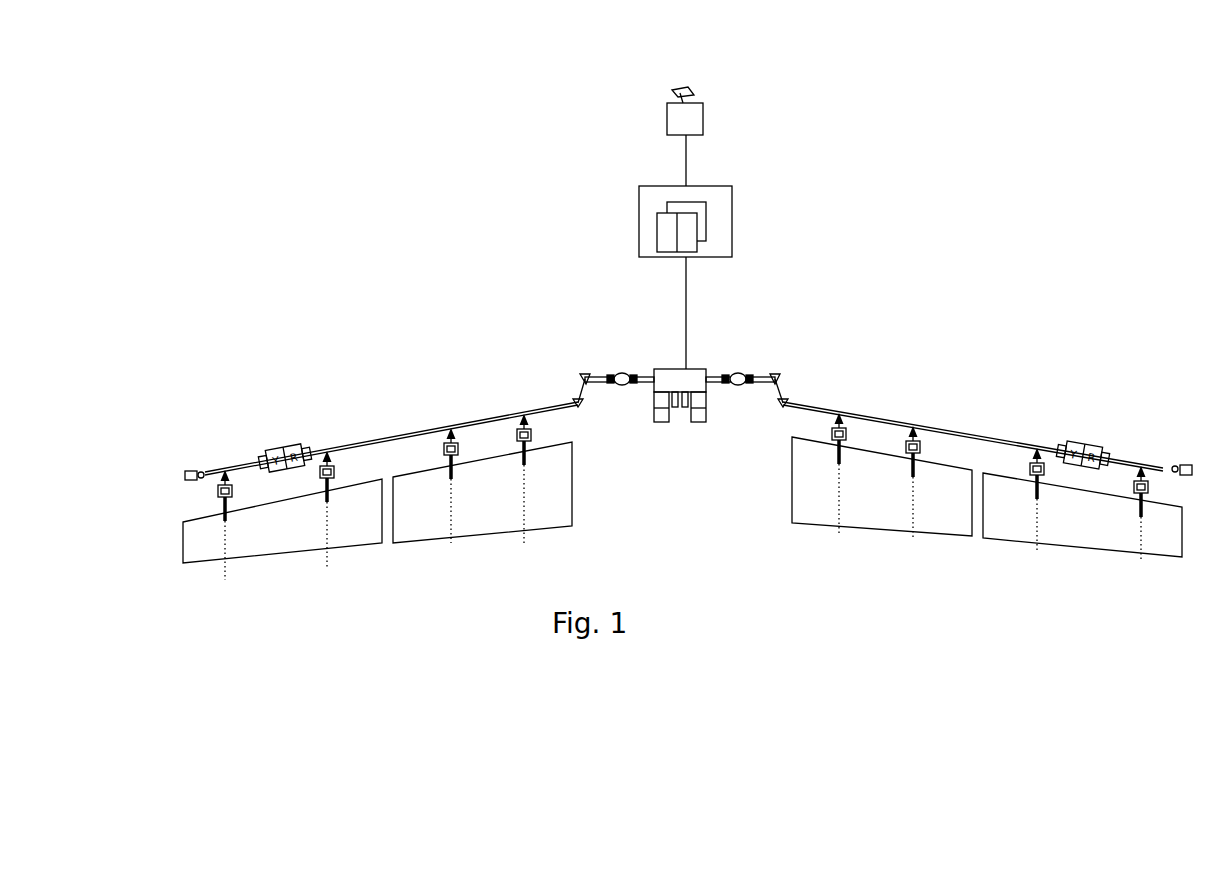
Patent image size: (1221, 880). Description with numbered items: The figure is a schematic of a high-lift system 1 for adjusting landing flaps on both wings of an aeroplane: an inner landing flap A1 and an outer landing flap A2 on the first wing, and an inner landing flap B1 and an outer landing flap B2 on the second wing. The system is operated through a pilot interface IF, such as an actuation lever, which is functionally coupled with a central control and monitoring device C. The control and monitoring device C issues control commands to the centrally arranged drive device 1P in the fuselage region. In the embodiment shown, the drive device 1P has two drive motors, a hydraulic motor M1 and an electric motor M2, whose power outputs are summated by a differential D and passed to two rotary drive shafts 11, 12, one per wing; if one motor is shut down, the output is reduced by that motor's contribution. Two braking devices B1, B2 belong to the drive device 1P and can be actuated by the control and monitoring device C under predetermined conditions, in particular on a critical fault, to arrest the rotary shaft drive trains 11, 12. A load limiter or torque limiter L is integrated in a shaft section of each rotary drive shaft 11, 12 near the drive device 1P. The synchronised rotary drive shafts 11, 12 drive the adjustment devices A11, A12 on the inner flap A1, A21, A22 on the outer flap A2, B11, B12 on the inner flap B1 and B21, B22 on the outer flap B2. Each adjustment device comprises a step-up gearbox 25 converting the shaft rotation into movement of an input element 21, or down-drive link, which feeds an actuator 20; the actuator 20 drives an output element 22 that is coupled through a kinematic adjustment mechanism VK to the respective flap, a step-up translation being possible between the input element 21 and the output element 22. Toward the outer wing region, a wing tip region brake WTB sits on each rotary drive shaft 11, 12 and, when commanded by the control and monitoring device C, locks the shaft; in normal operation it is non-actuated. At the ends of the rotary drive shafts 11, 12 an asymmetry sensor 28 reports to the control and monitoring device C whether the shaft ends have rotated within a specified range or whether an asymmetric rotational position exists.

The high-lift system 1 is at (992, 122).
The pilot interface IF is at (667, 112).
The control and monitoring device C is at (722, 195).
The drive device 1P is at (695, 385).
The braking device B1 is at (653, 394).
The hydraulic motor M1 is at (662, 418).
The differential D is at (672, 430).
The electric motor M2 is at (708, 415).
The braking device B2 is at (697, 397).
The load limiter or torque limiter L is at (622, 372).
The rotary drive shaft 11 is at (365, 442).
The rotary drive shaft 12 is at (993, 438).
The wing tip region brake WTB is at (290, 449).
The asymmetry sensor 28 is at (190, 470).
The step-up gearbox 25 is at (222, 472).
The input element 21 is at (242, 480).
The actuator 20 is at (212, 490).
The kinematic adjustment mechanism VK is at (196, 507).
The output element 22 is at (242, 508).
The outer landing flap A2 is at (296, 547).
The inner landing flap A1 is at (505, 516).
The adjustment device B11 is at (851, 418).
The adjustment device B12 is at (924, 420).
The adjustment device B21 is at (1043, 427).
The adjustment device B22 is at (1145, 431).
The adjustment device A22 is at (217, 351).
The adjustment device A21 is at (353, 351).
The adjustment device A12 is at (456, 351).
The adjustment device A11 is at (528, 351).